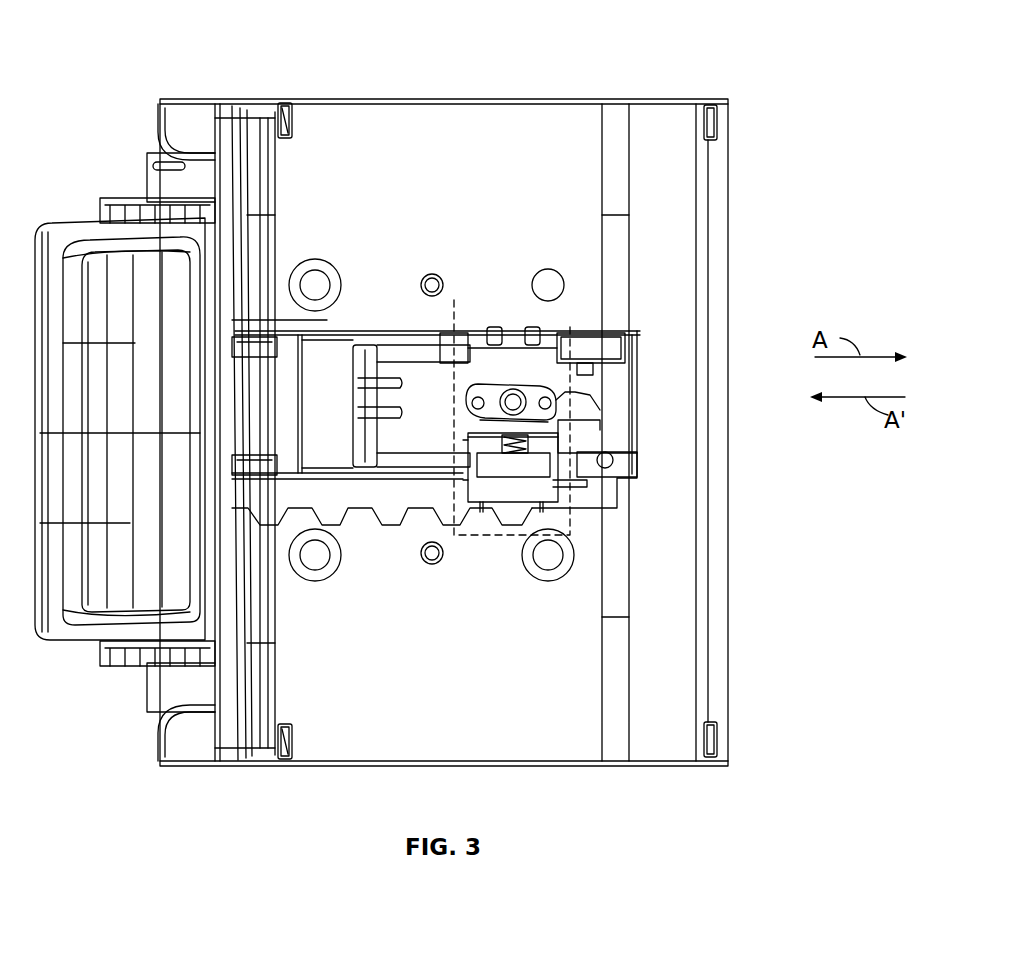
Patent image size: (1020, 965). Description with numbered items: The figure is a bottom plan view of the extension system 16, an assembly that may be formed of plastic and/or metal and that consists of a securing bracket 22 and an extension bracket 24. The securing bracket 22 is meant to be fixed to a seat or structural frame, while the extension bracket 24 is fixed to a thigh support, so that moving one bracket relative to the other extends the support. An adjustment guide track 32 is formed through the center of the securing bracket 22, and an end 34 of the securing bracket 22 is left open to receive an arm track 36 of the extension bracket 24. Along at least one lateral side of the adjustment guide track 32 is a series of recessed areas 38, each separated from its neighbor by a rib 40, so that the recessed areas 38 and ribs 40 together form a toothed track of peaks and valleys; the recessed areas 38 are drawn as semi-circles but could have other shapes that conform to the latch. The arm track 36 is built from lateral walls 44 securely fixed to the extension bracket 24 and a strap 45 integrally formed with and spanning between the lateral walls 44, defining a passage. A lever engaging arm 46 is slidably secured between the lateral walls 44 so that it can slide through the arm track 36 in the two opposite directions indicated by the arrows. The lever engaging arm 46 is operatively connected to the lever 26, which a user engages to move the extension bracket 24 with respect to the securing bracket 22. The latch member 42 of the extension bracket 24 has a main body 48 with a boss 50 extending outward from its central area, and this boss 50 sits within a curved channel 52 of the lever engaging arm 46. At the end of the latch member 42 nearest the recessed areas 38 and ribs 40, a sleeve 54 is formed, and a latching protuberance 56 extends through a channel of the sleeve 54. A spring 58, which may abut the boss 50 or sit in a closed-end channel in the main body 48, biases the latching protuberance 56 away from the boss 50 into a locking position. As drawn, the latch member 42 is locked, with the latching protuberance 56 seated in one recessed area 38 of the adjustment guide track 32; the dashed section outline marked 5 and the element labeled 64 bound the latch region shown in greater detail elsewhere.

The extension system 16 is at (255, 50).
The securing bracket 22 is at (437, 118).
The extension bracket 24 is at (150, 702).
The lever 26 is at (124, 592).
The adjustment guide track 32 is at (450, 305).
The end of the securing bracket 34 is at (255, 318).
The arm track 36 is at (316, 404).
The recessed area 38 is at (523, 533).
The rib 40 is at (472, 520).
The latch member 42 is at (533, 487).
The lateral wall 44 is at (387, 331).
The strap 45 is at (327, 358).
The lever engaging arm 46 is at (412, 378).
The main body 48 is at (495, 397).
The boss 50 is at (600, 378).
The curved channel 52 is at (483, 373).
The sleeve 54 is at (575, 482).
The latching protuberance 56 is at (518, 513).
The spring 58 is at (553, 447).
The scalloped rail 64 is at (377, 427).
The section line 5 is at (493, 540).